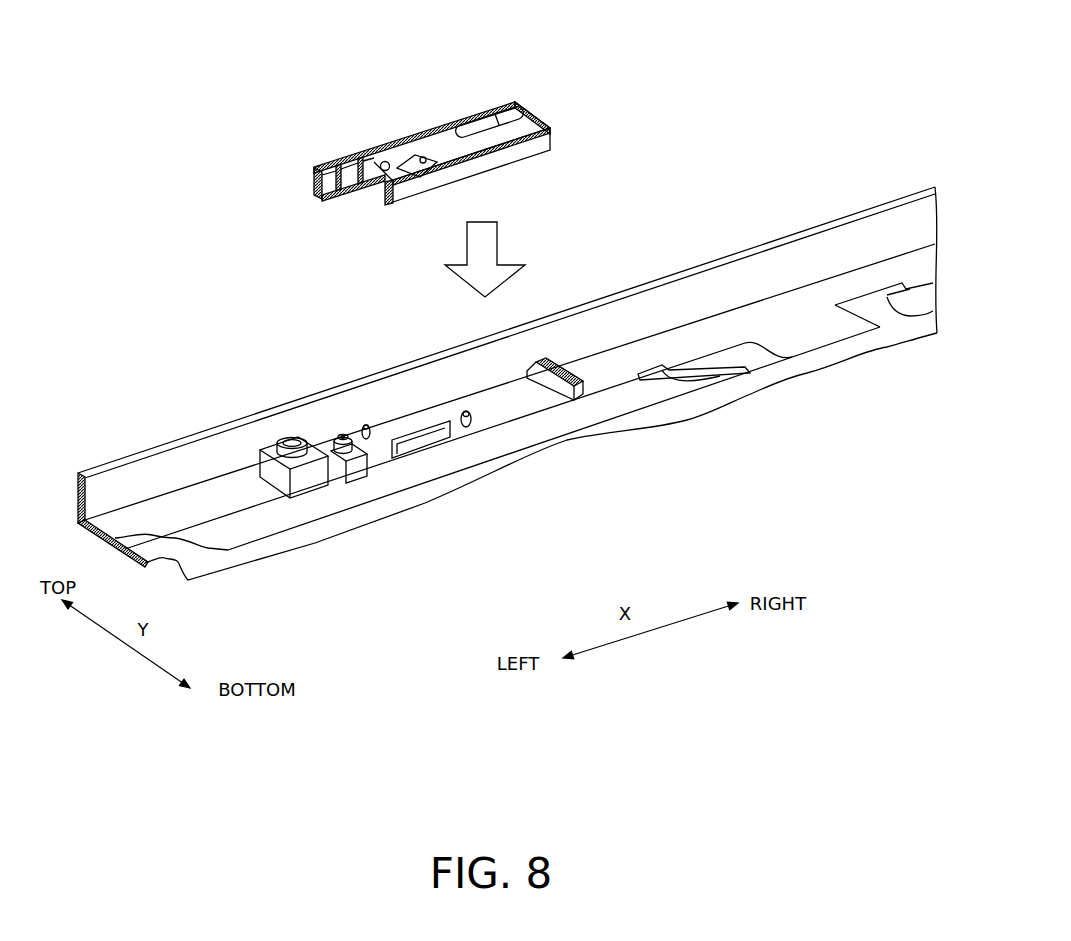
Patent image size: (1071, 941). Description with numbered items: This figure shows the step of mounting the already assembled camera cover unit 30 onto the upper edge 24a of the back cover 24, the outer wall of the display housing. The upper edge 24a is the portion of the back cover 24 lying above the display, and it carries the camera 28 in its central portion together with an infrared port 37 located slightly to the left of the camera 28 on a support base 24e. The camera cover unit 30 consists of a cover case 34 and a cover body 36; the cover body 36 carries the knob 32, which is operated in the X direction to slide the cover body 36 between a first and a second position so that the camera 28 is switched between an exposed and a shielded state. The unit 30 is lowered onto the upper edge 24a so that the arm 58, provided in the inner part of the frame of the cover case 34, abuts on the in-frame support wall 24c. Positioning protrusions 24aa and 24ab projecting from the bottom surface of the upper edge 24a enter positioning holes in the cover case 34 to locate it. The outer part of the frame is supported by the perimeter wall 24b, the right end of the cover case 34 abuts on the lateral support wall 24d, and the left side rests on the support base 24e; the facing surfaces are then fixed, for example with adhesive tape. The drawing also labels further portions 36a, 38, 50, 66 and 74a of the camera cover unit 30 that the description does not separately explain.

The back cover 24 is at (892, 150).
The upper edge 24a is at (825, 300).
The positioning protrusion 24aa is at (466, 428).
The positioning protrusion 24ab is at (367, 426).
The perimeter wall 24b is at (741, 276).
The in-frame support wall 24c is at (418, 452).
The lateral support wall 24d is at (568, 401).
The support base 24e is at (309, 468).
The camera 28 is at (344, 437).
The camera cover unit 30 is at (632, 110).
The knob 32 is at (517, 110).
The cover case 34 is at (543, 140).
The cover body 36 is at (462, 153).
The channel portion 36a is at (370, 146).
The infrared port 37 is at (293, 447).
The hole 38 is at (374, 163).
The rear rim 50 is at (428, 135).
The arm 58 is at (405, 193).
The slot 66 is at (444, 143).
The raised pad 74a is at (438, 130).